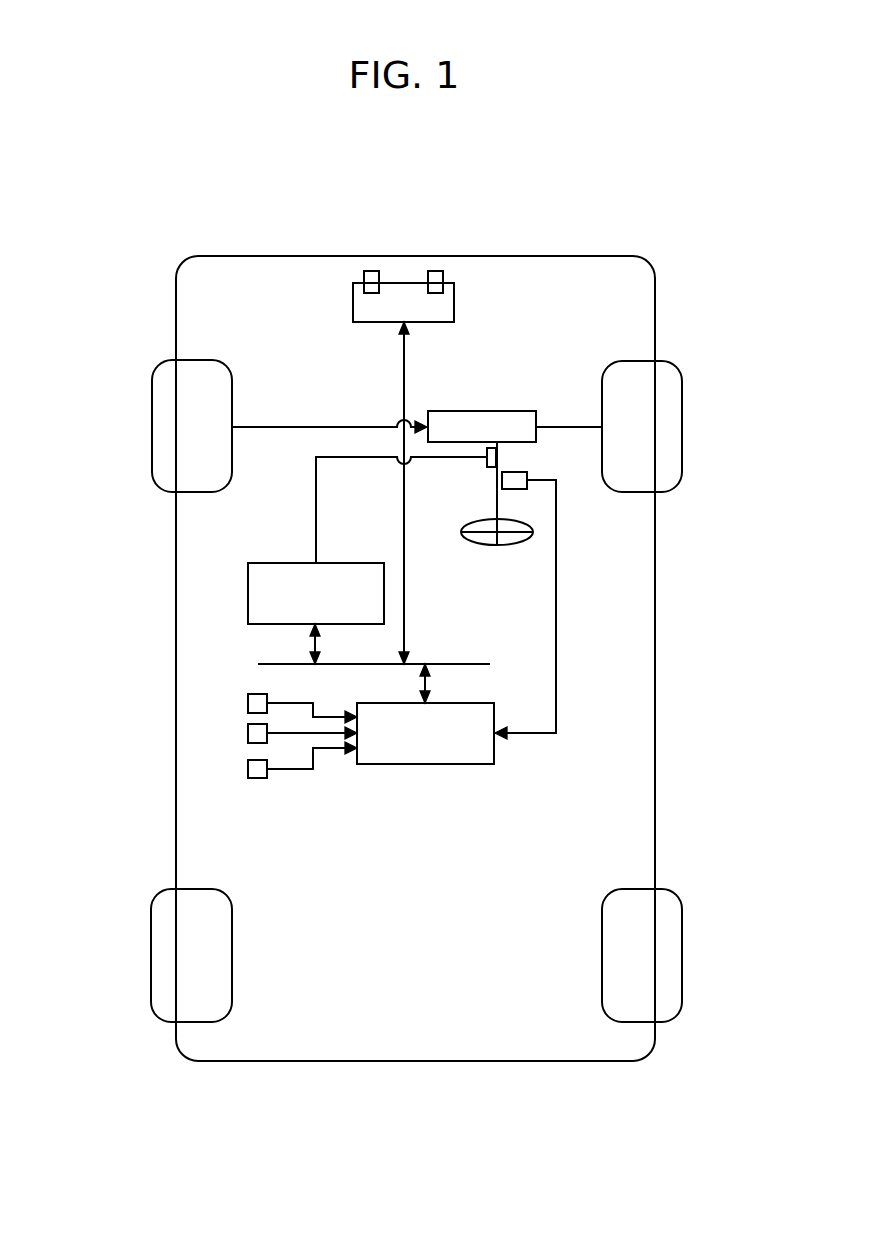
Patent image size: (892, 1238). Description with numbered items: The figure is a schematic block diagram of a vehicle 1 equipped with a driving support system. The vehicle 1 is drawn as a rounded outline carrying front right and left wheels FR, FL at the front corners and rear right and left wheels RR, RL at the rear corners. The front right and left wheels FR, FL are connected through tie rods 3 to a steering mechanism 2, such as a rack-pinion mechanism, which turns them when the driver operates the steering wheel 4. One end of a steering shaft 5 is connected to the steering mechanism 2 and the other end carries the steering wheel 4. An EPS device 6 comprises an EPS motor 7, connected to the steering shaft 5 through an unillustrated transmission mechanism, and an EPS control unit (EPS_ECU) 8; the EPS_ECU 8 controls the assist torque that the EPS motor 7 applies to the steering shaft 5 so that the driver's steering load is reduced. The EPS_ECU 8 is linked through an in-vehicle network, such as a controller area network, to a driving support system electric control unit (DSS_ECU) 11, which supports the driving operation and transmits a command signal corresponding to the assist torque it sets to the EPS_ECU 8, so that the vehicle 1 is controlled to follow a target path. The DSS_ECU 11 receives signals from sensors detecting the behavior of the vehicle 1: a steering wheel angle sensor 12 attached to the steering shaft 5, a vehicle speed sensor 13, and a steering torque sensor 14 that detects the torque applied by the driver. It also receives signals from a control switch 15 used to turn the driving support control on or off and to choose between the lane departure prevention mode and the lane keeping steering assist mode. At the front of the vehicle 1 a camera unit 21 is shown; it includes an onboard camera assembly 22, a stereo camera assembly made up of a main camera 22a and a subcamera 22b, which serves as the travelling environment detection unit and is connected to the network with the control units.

The vehicle 1 is at (578, 228).
The steering mechanism 2 is at (485, 410).
The tie rods 3 is at (297, 425).
The steering wheel 4 is at (503, 546).
The steering shaft 5 is at (496, 497).
The EPS device 6 is at (280, 500).
The EPS motor 7 is at (486, 459).
The EPS control unit (EPS_ECU) 8 is at (284, 562).
The driving support system electric control unit (DSS_ECU) 11 is at (426, 765).
The steering wheel angle sensor 12 is at (515, 471).
The vehicle speed sensor 13 is at (247, 703).
The steering torque sensor 14 is at (247, 733).
The control switch 15 is at (247, 769).
The camera unit 21 is at (353, 300).
The onboard camera assembly 22 is at (342, 201).
The main camera 22a is at (435, 270).
The subcamera 22b is at (372, 270).
The front left wheel FL is at (151, 413).
The front right wheel FR is at (682, 425).
The rear left wheel RL is at (151, 942).
The rear right wheel RR is at (682, 952).